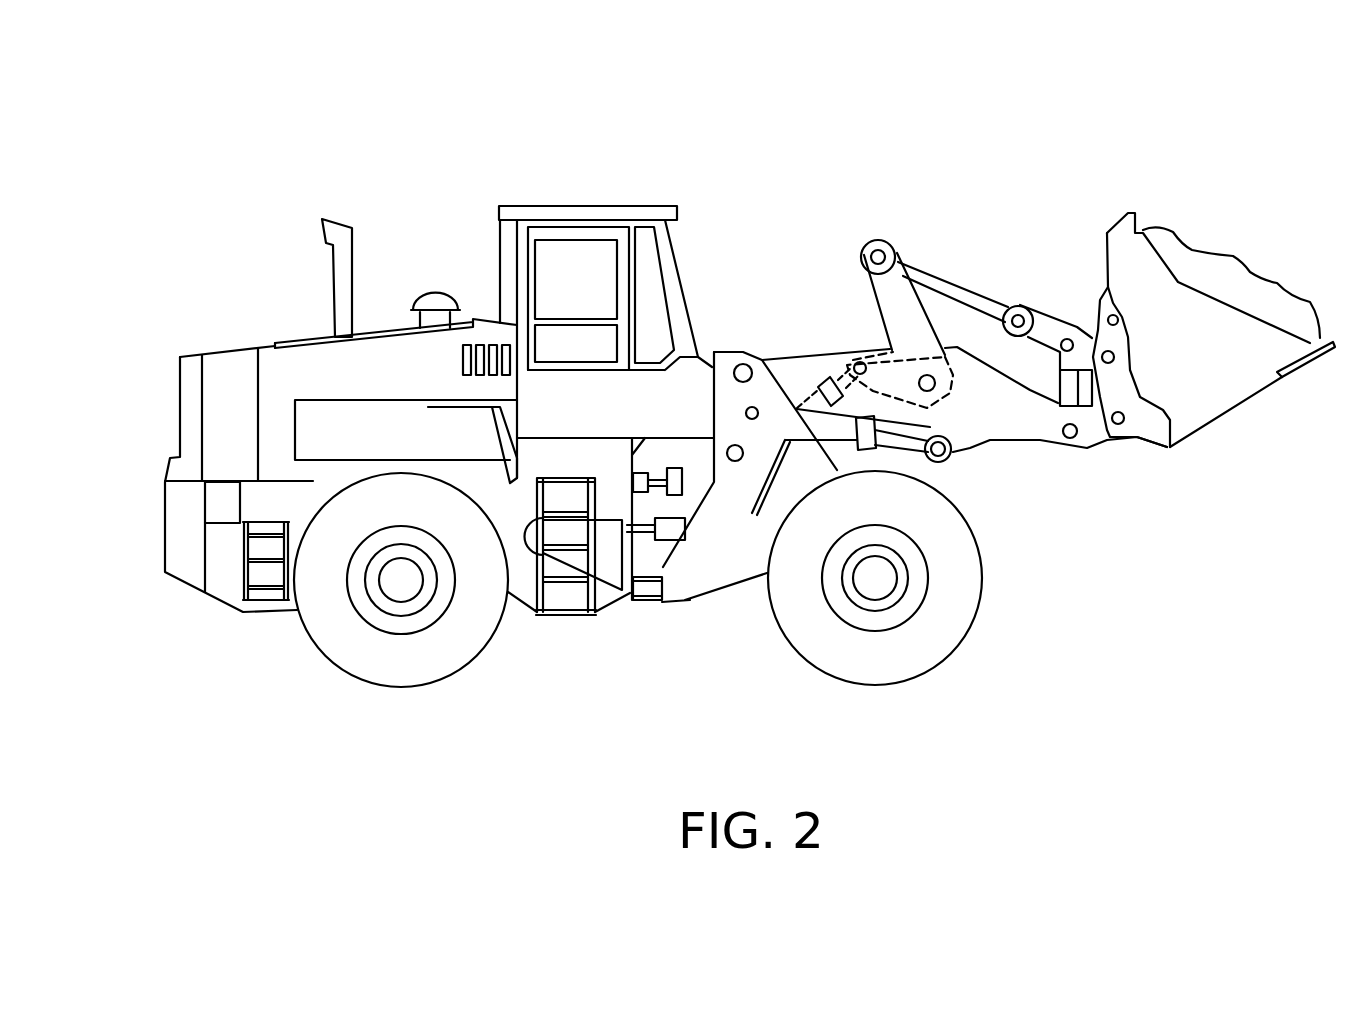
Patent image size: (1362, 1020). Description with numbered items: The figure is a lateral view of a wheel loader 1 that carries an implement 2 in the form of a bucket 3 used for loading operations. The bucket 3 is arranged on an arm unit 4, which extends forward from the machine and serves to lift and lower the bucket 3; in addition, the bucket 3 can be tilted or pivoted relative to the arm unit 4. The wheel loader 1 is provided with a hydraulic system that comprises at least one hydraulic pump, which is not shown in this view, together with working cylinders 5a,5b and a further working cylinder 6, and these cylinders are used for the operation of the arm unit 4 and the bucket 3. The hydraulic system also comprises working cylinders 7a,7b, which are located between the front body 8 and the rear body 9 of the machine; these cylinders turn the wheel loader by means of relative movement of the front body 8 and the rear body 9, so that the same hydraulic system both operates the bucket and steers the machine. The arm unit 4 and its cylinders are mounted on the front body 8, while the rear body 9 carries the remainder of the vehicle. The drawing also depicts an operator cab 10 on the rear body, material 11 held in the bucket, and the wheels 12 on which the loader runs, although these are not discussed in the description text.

The wheel loader 1 is at (447, 119).
The implement 2 is at (1062, 251).
The bucket 3 is at (1198, 385).
The arm unit 4 is at (1090, 435).
The working cylinders 5a,5b is at (905, 442).
The working cylinder 6 is at (840, 376).
The working cylinders 7a,7b is at (698, 482).
The front body 8 is at (697, 572).
The rear body 9 is at (223, 573).
The operator cab 10 is at (598, 212).
The material in bucket 11 is at (1220, 272).
The wheels 12 is at (395, 583).